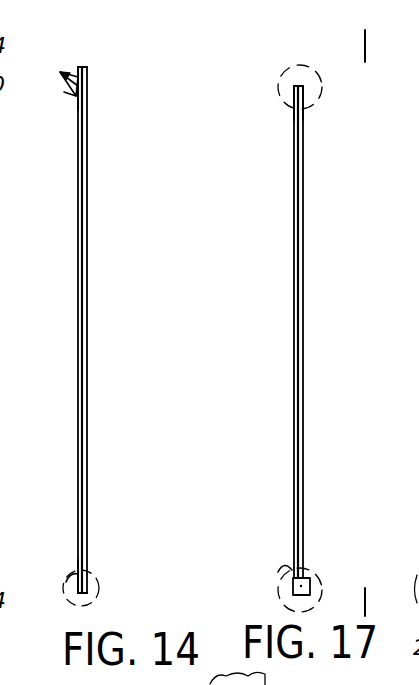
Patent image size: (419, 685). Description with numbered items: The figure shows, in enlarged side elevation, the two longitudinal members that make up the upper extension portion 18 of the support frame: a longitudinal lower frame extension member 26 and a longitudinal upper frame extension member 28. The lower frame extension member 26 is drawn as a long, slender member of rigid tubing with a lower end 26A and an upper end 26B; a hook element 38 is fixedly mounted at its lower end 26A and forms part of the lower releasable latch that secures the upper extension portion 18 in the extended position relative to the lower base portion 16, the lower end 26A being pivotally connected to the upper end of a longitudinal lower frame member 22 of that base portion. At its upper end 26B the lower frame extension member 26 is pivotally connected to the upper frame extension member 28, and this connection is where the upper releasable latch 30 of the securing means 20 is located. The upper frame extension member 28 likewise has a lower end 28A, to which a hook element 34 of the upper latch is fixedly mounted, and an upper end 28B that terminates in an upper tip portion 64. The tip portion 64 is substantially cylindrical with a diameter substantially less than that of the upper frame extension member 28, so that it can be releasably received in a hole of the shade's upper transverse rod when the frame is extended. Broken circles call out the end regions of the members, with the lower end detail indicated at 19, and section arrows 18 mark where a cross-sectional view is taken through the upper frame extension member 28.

In FIG. 14, the lower base portion 16 is at (95, 569).
In FIG. 17, the upper extension portion 18 is at (330, 46).
In FIG. 17, the detail circle lower end of bar 19 is at (312, 560).
In FIG. 14, the means for releasably securing the upper extension portion 20 is at (56, 69).
In FIG. 17, the longitudinal lower frame member 22 is at (297, 62).
In FIG. 14, the longitudinal lower frame extension member 26 is at (86, 372).
In FIG. 14, the lower end of lower frame extension member 26A is at (70, 590).
In FIG. 14, the upper end of lower frame extension member 26B is at (86, 104).
In FIG. 17, the longitudinal upper frame extension member 28 is at (304, 393).
In FIG. 17, the lower end of upper frame extension member 28A is at (293, 578).
In FIG. 17, the upper end of upper frame extension member 28B is at (304, 100).
In FIG. 14, the upper releasable latch 30 is at (61, 98).
In FIG. 17, the hook element 34 is at (290, 575).
In FIG. 14, the hook element 38 is at (72, 577).
In FIG. 17, the upper tip portion 64 is at (297, 86).